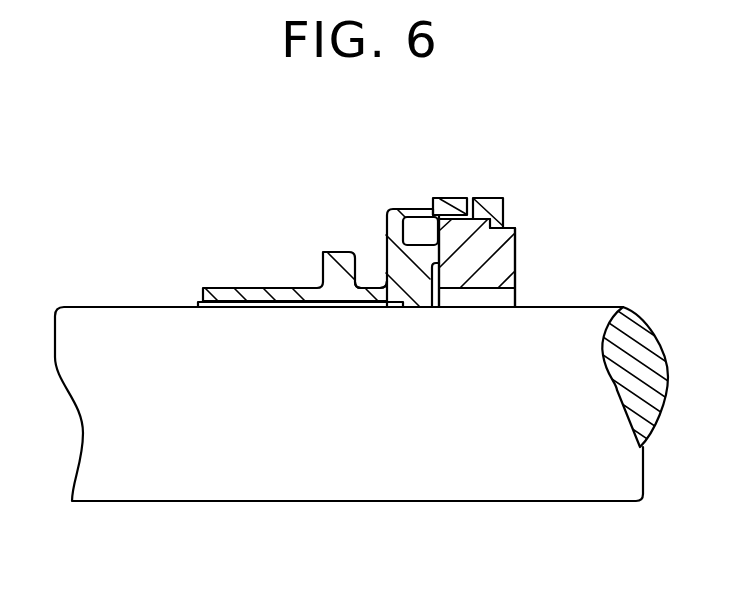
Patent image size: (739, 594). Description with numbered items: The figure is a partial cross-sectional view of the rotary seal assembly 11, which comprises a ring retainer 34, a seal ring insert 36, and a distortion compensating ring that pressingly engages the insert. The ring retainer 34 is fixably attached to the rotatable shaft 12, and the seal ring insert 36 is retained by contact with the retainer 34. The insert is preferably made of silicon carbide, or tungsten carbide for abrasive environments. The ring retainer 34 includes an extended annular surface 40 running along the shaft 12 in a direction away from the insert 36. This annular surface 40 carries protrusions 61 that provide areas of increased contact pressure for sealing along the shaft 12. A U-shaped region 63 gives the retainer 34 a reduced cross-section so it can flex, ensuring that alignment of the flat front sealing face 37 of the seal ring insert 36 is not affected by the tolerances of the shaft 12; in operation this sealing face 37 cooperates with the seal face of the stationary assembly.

The rotary seal assembly 11 is at (458, 160).
The rotatable shaft 12 is at (493, 482).
The ring retainer 34 is at (398, 208).
The seal ring insert 36 is at (485, 288).
The sealing face 37 is at (515, 250).
The extended annular surface 40 is at (280, 288).
The protrusions 61 is at (250, 306).
The U-shaped region 63 is at (372, 276).